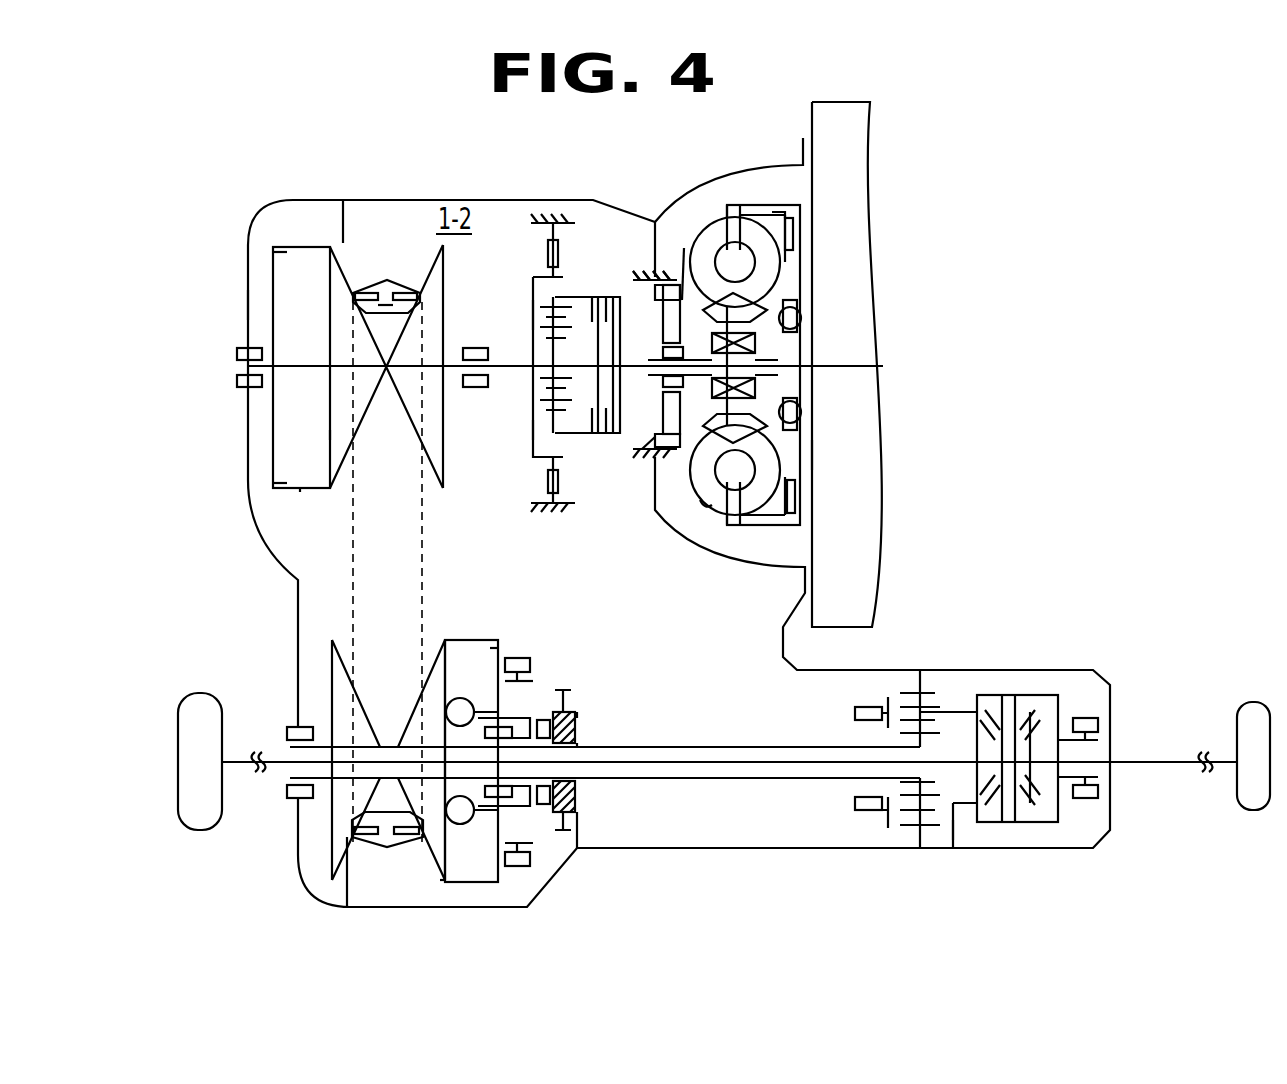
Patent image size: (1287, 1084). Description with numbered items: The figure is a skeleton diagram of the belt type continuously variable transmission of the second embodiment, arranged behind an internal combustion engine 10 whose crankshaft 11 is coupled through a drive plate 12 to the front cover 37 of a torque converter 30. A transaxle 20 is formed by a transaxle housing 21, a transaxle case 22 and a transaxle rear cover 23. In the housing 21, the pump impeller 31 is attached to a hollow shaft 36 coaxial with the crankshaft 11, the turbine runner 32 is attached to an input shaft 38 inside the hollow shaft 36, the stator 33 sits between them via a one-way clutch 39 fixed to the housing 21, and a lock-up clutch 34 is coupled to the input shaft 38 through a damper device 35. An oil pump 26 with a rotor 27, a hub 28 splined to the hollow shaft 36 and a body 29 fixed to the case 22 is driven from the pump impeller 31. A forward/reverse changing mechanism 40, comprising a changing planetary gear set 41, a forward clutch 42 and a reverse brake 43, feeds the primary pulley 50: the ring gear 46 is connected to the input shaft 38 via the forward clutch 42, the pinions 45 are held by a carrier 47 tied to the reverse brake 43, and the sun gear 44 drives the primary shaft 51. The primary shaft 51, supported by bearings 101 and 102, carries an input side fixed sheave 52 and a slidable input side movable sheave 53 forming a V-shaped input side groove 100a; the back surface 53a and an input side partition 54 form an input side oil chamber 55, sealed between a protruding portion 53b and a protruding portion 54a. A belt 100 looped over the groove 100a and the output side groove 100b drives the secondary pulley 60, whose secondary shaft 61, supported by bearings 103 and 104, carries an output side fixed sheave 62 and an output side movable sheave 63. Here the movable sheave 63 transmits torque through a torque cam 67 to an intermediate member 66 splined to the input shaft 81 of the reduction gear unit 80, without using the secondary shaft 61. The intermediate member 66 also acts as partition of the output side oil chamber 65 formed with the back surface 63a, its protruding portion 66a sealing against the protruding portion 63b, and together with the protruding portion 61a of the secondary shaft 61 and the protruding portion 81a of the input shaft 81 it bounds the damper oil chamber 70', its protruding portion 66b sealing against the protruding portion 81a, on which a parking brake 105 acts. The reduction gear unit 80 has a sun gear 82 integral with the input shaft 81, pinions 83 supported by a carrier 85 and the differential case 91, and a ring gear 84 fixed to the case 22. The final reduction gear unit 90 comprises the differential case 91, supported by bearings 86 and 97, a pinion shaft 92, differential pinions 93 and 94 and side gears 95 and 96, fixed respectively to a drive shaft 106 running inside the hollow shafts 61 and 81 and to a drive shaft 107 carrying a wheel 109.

The internal combustion engine 10 is at (878, 138).
The crankshaft 11 is at (838, 364).
The drive plate 12 is at (815, 440).
The transaxle 20 is at (415, 188).
The transaxle housing 21 is at (745, 167).
The transaxle case 22 is at (590, 198).
The transaxle rear cover 23 is at (248, 272).
The oil pump 26 is at (672, 256).
The rotor 27 is at (677, 427).
The hub 28 is at (735, 263).
The body 29 is at (640, 455).
The torque converter 30 is at (757, 334).
The pump impeller 31 is at (717, 470).
The turbine runner 32 is at (762, 245).
The stator 33 is at (735, 469).
The lock-up clutch 34 is at (800, 492).
The damper device 35 is at (795, 296).
The hollow shaft 36 is at (667, 382).
The front cover 37 is at (785, 207).
The input shaft 38 is at (634, 362).
The one-way clutch 39 is at (757, 388).
The forward/reverse changing mechanism 40 is at (636, 388).
The changing planetary gear set 41 is at (539, 360).
The forward clutch 42 is at (623, 290).
The reverse brake 43 is at (563, 253).
The sun gear 44 is at (577, 378).
The pinions 45 is at (560, 340).
The ring gear 46 is at (540, 428).
The carrier 47 is at (528, 316).
The primary pulley 50 is at (508, 524).
The primary shaft 51 is at (510, 372).
The input side fixed sheave 52 is at (438, 277).
The input side movable sheave 53 is at (298, 544).
The back surface 53a is at (330, 435).
The ring-shaped protruding portion 53b is at (303, 490).
The input side partition 54 is at (242, 350).
The ring-shaped protruding portion 54a is at (273, 482).
The input side oil chamber 55 is at (290, 251).
The secondary pulley 60 is at (736, 763).
The secondary shaft 61 is at (392, 744).
The protruding portion 61a is at (580, 740).
The output side fixed sheave 62 is at (332, 670).
The output side movable sheave 63 is at (438, 763).
The back surface 63a is at (446, 640).
The ring-shaped protruding portion 63b is at (473, 886).
The output side oil chamber 65 is at (478, 650).
The intermediate member 66 is at (535, 782).
The ring-shaped protruding portion 66a is at (500, 864).
The ring-shaped protruding portion 66b is at (543, 718).
The torque cam 67 is at (443, 875).
The damper oil chamber 70' is at (593, 770).
The reduction gear unit 80 is at (951, 748).
The input shaft 81 is at (729, 716).
The protruding portion 81a is at (578, 712).
The sun gear 82 is at (927, 733).
The pinions 83 is at (940, 700).
The ring gear 84 is at (912, 693).
The carrier 85 is at (953, 806).
The bearing 86 is at (865, 705).
The final reduction gear unit 90 is at (1056, 748).
The differential case 91 is at (1013, 695).
The pinion shaft 92 is at (1000, 697).
The differential pinion 93 is at (1038, 712).
The differential pinion 94 is at (1030, 806).
The side gear 95 is at (995, 783).
The side gear 96 is at (1058, 768).
The bearing 97 is at (1093, 801).
The belt 100 is at (282, 285).
The input side groove 100a is at (263, 324).
The output side groove 100b is at (373, 803).
The bearing 101 is at (477, 390).
The bearing 102 is at (237, 352).
The bearing 103 is at (287, 790).
The bearing 104 is at (535, 660).
The parking brake 105 is at (565, 688).
The drive shaft 106 is at (765, 768).
The drive shaft 107 is at (1167, 757).
The wheel 109 is at (1248, 640).